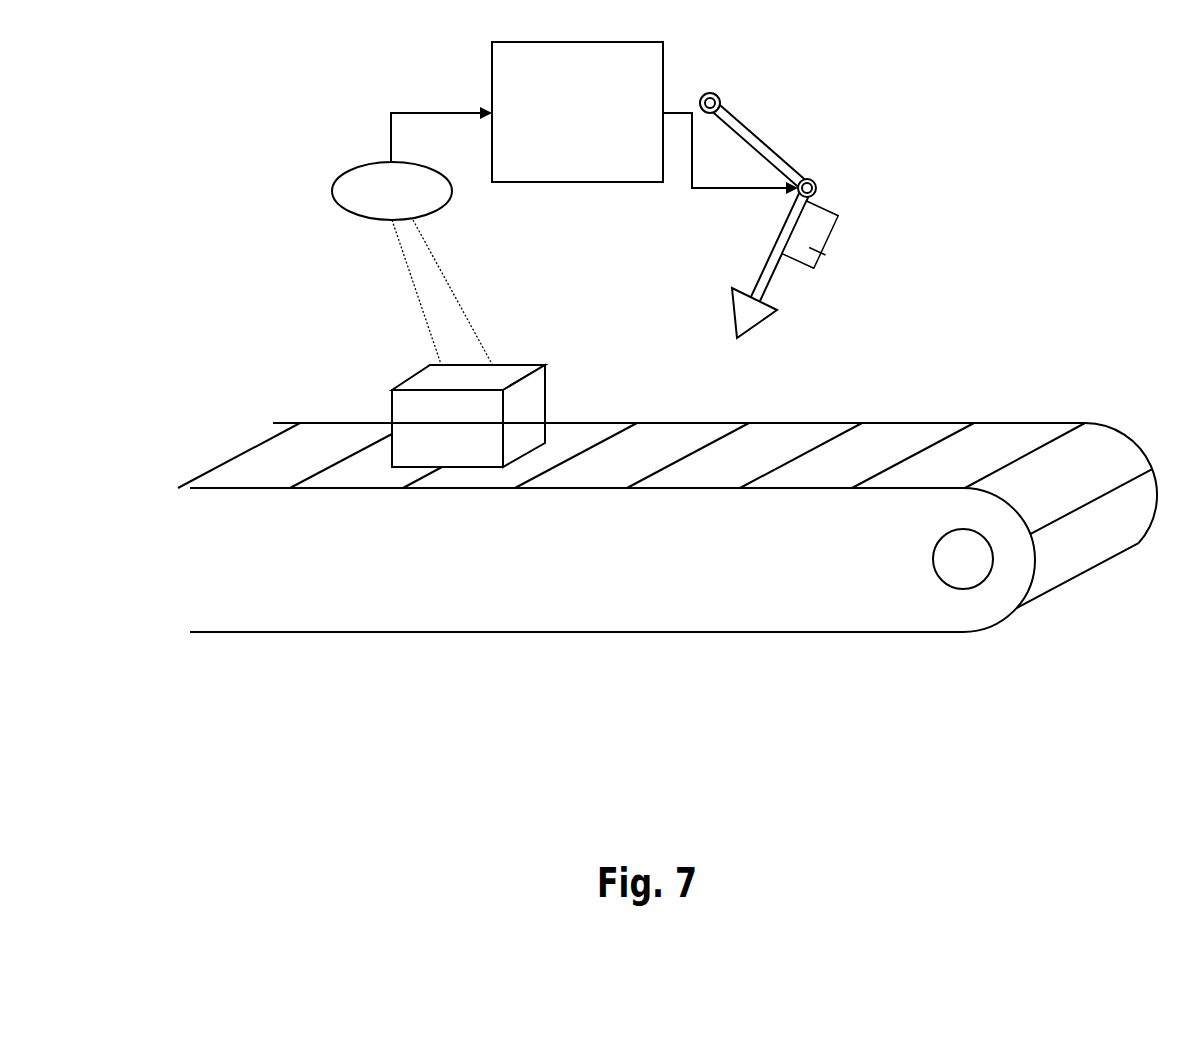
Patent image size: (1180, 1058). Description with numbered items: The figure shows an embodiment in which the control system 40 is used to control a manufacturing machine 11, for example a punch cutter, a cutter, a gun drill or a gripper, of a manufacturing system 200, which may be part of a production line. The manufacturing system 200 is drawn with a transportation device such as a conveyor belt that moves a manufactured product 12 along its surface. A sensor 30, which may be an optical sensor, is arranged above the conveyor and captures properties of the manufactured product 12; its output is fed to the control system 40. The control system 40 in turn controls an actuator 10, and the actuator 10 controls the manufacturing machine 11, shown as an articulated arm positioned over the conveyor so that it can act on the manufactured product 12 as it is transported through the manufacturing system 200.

The control system 40 is at (478, 50).
The sensor 30 is at (332, 193).
The manufacturing machine 11 is at (777, 155).
The actuator 10 is at (835, 230).
The manufactured product 12 is at (552, 395).
The manufacturing system 200 is at (564, 635).